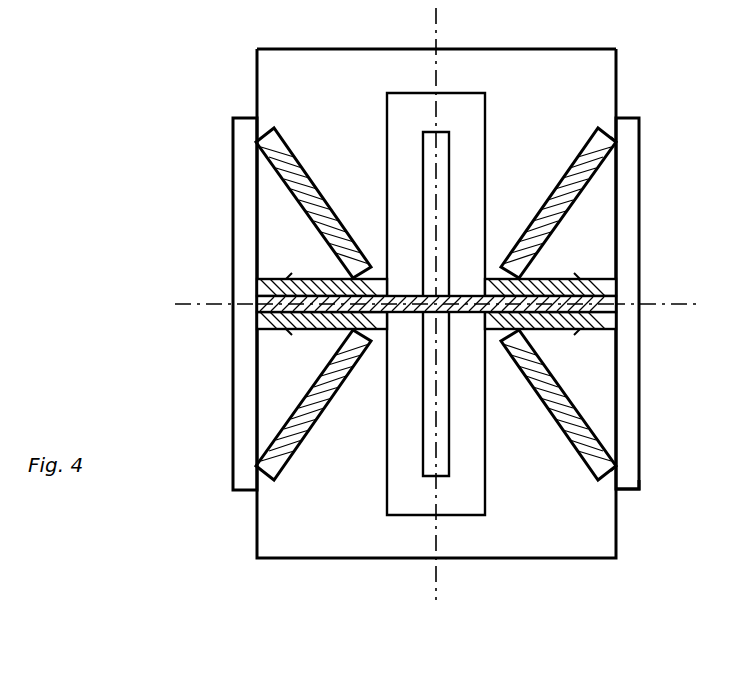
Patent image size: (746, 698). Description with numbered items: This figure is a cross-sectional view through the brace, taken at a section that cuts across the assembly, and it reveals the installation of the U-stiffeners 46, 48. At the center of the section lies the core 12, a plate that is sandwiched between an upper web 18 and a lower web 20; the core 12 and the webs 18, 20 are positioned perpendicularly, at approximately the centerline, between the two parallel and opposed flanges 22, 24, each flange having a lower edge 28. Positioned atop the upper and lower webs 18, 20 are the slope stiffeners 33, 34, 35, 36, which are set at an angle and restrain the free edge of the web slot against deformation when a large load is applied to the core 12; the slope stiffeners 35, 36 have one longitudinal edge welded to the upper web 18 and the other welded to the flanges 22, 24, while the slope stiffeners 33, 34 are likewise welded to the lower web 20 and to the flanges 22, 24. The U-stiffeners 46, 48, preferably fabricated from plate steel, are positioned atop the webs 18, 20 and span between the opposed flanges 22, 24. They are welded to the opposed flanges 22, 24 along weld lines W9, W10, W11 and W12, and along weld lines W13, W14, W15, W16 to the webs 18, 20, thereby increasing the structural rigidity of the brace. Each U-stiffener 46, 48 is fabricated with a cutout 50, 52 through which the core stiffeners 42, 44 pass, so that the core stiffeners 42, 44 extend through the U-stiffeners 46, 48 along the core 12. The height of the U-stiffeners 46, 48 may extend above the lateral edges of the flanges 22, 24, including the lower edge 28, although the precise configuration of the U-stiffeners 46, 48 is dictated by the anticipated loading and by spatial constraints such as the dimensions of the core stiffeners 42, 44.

The core 12 is at (615, 308).
The upper web 18 is at (262, 290).
The lower web 20 is at (267, 318).
The flange 22 is at (233, 165).
The flange 24 is at (640, 185).
The lower edge 28 is at (640, 490).
The slope stiffener 33 is at (548, 405).
The slope stiffener 34 is at (327, 410).
The slope stiffener 35 is at (328, 205).
The slope stiffener 36 is at (548, 205).
The core stiffener 42 is at (448, 133).
The core stiffener 44 is at (434, 478).
The U-stiffener 46 is at (290, 68).
The U-stiffener 48 is at (310, 535).
The cutout 50 is at (400, 94).
The cutout 52 is at (478, 500).
The weld line W9 is at (258, 195).
The weld line W10 is at (258, 397).
The weld line W11 is at (614, 203).
The weld line W12 is at (615, 417).
The weld line W13 is at (290, 276).
The weld line W14 is at (280, 358).
The weld line W15 is at (577, 280).
The weld line W16 is at (563, 332).